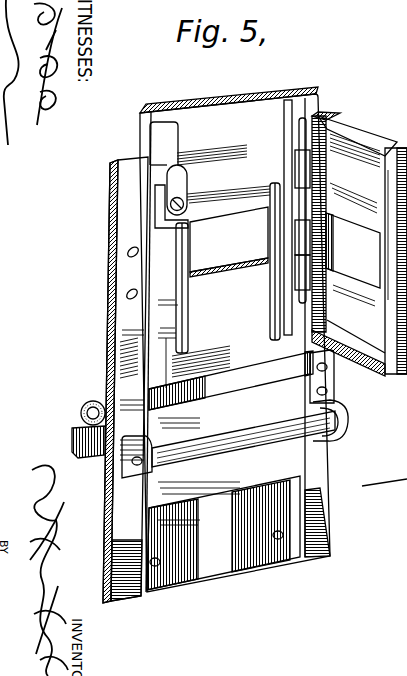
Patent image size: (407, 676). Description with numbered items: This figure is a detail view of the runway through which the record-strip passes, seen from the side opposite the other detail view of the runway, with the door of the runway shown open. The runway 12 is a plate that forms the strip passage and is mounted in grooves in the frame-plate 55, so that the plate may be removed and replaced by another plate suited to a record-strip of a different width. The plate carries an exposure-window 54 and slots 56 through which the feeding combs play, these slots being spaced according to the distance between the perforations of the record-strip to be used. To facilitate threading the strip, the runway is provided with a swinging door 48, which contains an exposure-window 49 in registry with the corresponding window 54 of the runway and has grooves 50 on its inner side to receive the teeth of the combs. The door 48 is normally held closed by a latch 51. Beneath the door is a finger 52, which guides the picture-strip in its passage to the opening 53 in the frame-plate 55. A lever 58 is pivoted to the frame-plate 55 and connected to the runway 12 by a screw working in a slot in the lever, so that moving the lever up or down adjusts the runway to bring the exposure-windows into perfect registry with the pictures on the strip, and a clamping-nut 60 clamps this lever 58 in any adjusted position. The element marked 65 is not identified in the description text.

The runway 12 is at (235, 339).
The swinging door 48 is at (365, 139).
The exposure-window 49 is at (353, 250).
The grooves 50 is at (327, 114).
The latch 51 is at (189, 182).
The finger 52 is at (241, 380).
The opening 53 is at (223, 530).
The exposure-window 54 is at (229, 242).
The frame-plate 55 is at (123, 312).
The slots 56 is at (274, 186).
The lever 58 is at (92, 452).
The clamping-nut 60 is at (80, 413).
The rod 65 is at (235, 439).